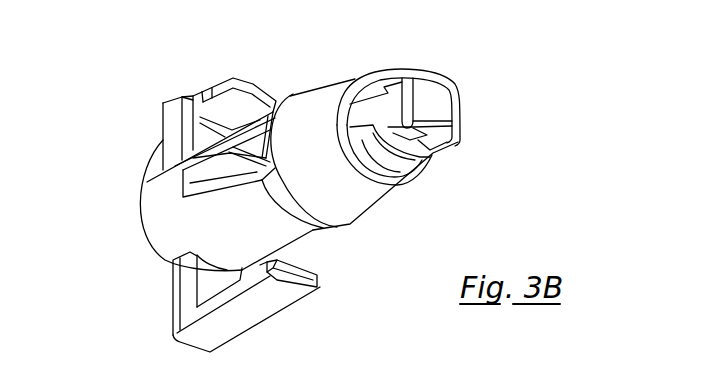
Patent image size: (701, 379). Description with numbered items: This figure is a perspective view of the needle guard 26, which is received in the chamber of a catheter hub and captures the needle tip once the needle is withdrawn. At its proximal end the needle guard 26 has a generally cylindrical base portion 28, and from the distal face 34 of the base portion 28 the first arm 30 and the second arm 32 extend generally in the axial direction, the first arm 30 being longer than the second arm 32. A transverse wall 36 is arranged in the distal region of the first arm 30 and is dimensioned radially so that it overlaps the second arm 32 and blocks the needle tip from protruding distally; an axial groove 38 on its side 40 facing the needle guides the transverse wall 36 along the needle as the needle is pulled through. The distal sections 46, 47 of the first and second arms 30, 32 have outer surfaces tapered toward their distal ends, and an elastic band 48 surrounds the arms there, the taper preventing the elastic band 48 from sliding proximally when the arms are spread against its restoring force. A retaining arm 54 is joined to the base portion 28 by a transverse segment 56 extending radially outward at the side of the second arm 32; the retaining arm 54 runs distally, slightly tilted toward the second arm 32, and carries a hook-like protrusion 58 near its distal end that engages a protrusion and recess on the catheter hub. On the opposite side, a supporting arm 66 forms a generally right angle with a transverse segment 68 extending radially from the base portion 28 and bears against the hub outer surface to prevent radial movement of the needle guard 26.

The needle guard 26 is at (96, 106).
The base portion 28 is at (158, 189).
The first arm 30 is at (248, 128).
The second arm 32 is at (313, 230).
The distal face 34 is at (183, 190).
The transverse wall 36 is at (462, 121).
The axial groove 38 is at (433, 138).
The side 40 is at (440, 148).
The distal section 46 is at (373, 85).
The distal section 47 is at (398, 168).
The elastic band 48 is at (358, 210).
The retaining arm 54 is at (263, 310).
The transverse segment 56 is at (183, 292).
The hook-like protrusion 58 is at (317, 260).
The supporting arm 66 is at (211, 90).
The transverse segment 68 is at (172, 135).